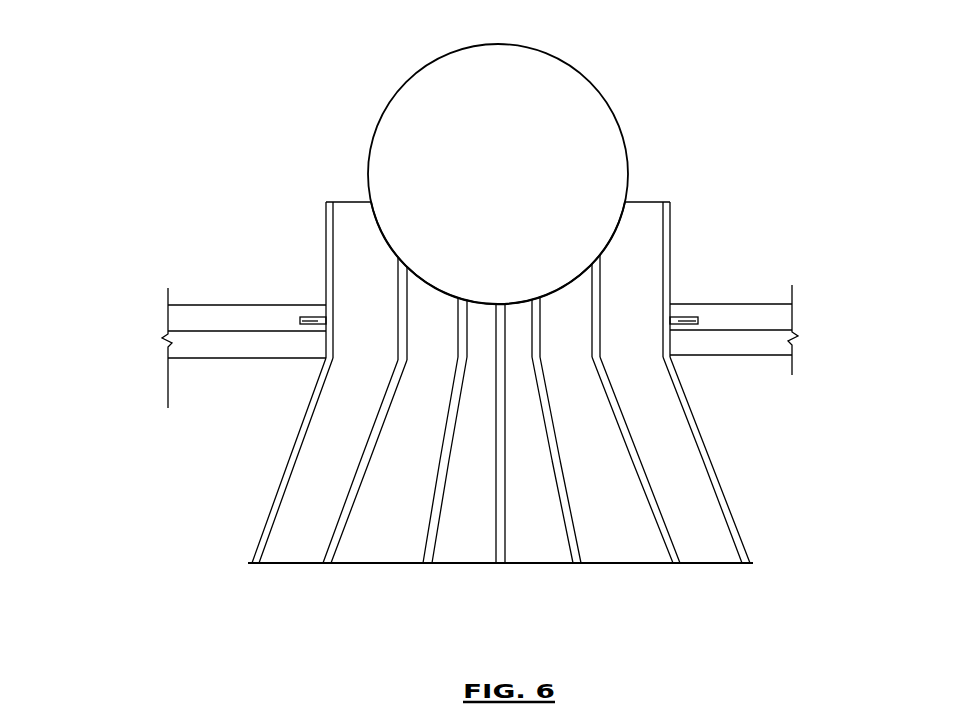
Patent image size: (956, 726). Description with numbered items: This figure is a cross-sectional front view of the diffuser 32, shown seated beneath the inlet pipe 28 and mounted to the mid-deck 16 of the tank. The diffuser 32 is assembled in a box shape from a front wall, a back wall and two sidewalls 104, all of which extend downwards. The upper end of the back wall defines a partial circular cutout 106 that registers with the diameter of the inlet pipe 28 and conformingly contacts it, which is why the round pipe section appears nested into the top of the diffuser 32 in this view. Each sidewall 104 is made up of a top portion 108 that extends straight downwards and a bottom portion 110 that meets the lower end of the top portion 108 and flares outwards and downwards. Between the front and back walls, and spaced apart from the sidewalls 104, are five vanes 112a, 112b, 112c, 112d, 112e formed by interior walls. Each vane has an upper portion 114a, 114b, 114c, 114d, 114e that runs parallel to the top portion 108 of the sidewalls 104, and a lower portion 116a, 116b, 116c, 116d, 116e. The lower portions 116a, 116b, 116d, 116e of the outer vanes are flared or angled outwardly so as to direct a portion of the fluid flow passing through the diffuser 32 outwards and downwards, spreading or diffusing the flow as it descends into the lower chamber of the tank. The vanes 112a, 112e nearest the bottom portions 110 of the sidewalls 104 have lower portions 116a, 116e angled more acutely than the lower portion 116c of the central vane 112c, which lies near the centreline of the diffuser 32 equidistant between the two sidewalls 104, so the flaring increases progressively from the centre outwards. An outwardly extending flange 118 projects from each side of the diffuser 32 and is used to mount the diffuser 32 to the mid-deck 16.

The mid-deck 16 is at (186, 284).
The inlet pipe 28 is at (590, 80).
The diffuser 32 is at (138, 544).
The sidewalls 104 is at (311, 401).
The partial circular cutout 106 is at (612, 237).
The top portion 108 is at (325, 222).
The bottom portion 110 is at (281, 484).
The vane 112a is at (380, 422).
The vane 112b is at (452, 430).
The vane 112c is at (497, 438).
The vane 112d is at (552, 423).
The vane 112e is at (620, 405).
The upper portion 114a is at (410, 270).
The upper portion 114b is at (466, 302).
The upper portion 114c is at (504, 305).
The upper portion 114d is at (548, 305).
The upper portion 114e is at (602, 273).
The lower portion 116a is at (333, 535).
The lower portion 116b is at (432, 535).
The lower portion 116c is at (507, 540).
The lower portion 116d is at (575, 535).
The lower portion 116e is at (680, 535).
The flange 118 is at (306, 317).